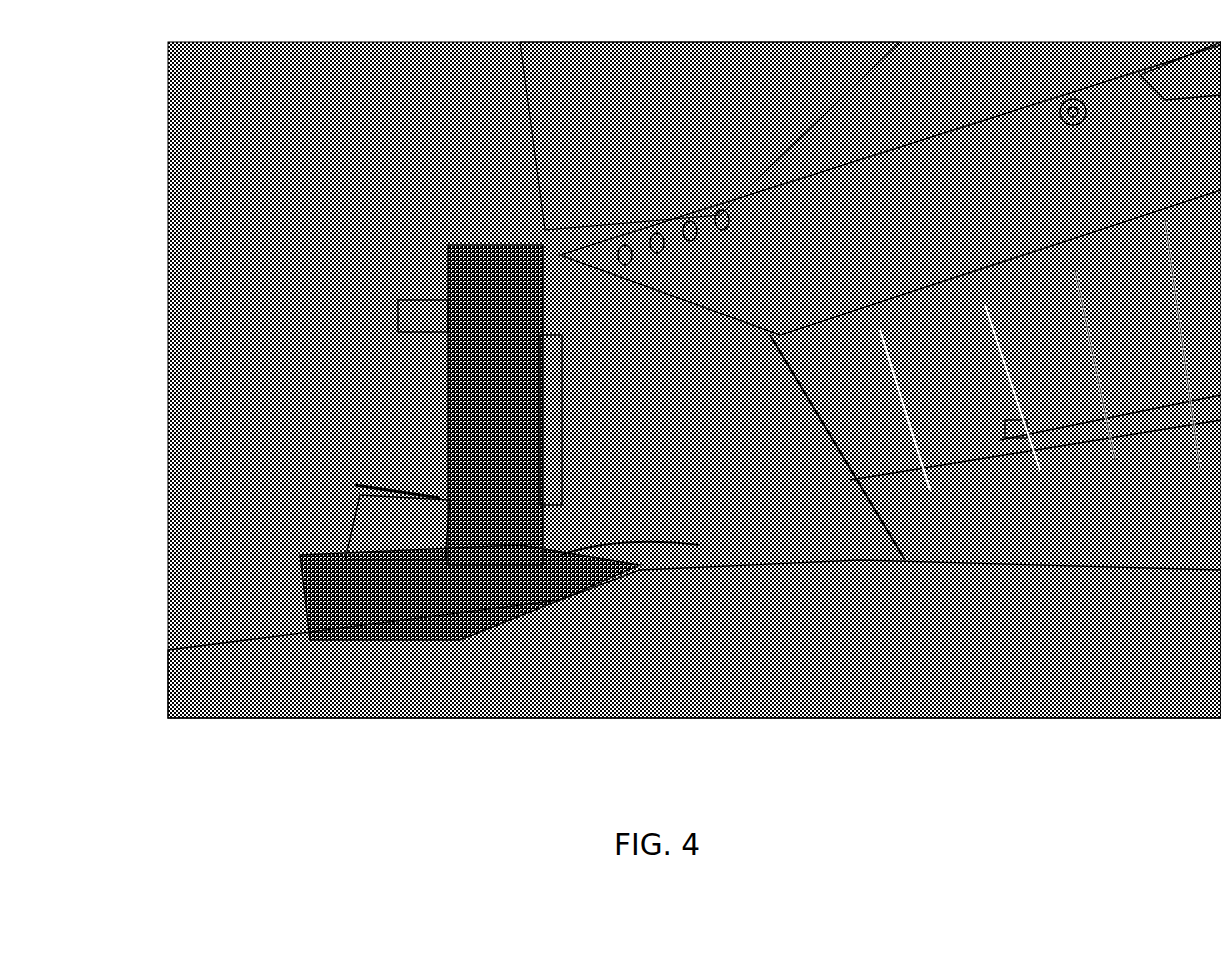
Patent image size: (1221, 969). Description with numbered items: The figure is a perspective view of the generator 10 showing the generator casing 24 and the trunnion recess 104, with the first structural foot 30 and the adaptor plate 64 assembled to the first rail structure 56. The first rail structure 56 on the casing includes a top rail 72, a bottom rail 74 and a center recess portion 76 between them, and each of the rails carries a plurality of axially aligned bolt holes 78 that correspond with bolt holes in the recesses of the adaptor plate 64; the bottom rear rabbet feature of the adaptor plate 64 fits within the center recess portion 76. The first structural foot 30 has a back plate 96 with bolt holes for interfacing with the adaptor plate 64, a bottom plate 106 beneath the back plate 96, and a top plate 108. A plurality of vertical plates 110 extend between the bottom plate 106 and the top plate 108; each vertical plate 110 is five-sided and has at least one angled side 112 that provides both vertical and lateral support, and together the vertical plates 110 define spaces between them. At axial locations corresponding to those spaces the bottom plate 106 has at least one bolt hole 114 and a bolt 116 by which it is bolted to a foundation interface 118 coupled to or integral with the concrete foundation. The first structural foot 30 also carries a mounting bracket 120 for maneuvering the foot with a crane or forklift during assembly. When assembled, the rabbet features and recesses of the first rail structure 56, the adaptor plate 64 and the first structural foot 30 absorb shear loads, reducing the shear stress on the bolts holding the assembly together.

The generator 10 is at (148, 100).
The generator casing 24 is at (570, 95).
The first structural foot 30 is at (730, 588).
The first rail structure 56 is at (401, 578).
The first adaptor plate 64 is at (466, 459).
The top rail 72 is at (423, 337).
The bottom rail 74 is at (397, 527).
The center recess portion 76 is at (397, 470).
The bolt holes 78 is at (655, 250).
The back plate 96 is at (552, 390).
The trunnion recess 104 is at (1172, 74).
The bottom plate 106 is at (621, 540).
The top plate 108 is at (942, 236).
The vertical plates 110 is at (1163, 310).
The angled side 112 is at (798, 425).
The bolt hole 114 is at (1015, 435).
The bolt 116 is at (1035, 425).
The foundation interface 118 is at (960, 528).
The mounting bracket 120 is at (1071, 122).